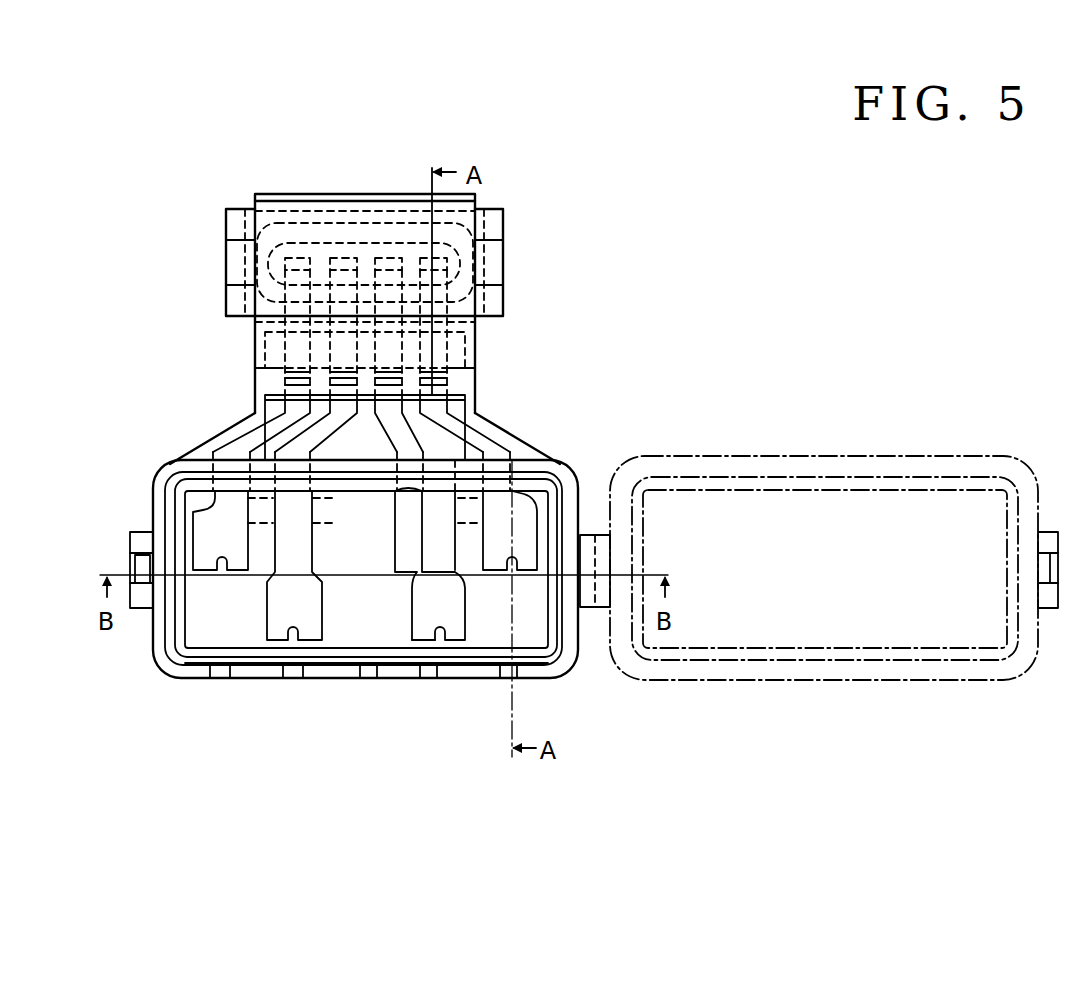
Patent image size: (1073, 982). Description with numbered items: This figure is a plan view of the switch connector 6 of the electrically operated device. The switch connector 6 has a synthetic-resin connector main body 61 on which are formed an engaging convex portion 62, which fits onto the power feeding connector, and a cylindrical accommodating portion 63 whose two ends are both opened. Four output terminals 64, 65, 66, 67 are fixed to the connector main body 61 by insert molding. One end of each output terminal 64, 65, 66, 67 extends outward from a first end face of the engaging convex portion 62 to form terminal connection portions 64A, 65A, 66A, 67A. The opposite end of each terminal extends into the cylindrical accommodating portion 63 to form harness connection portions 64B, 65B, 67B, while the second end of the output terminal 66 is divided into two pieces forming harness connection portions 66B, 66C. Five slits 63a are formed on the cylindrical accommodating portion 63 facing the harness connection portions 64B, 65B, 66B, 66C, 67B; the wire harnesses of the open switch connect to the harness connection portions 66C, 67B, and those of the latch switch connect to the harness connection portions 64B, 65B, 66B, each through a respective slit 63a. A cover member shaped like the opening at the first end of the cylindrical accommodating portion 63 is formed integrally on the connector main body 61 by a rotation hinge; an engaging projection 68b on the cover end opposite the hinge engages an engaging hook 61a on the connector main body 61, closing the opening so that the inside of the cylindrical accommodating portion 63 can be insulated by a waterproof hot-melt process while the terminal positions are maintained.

The switch connector 6 is at (627, 360).
The connector main body 61 is at (223, 430).
The engaging hook 61a is at (143, 563).
The engaging convex portion 62 is at (396, 246).
The cylindrical accommodating portion 63 is at (173, 668).
The slits 63a is at (220, 680).
The output terminal 64 is at (285, 299).
The terminal connection portion 64A is at (292, 255).
The harness connection portion 64B is at (238, 572).
The output terminal 65 is at (328, 293).
The terminal connection portion 65A is at (342, 258).
The harness connection portion 65B is at (312, 640).
The output terminal 66 is at (403, 350).
The terminal connection portion 66A is at (385, 258).
The harness connection portion 66B is at (386, 572).
The harness connection portion 66C is at (420, 640).
The output terminal 67 is at (492, 430).
The terminal connection portion 67A is at (433, 262).
The harness connection portion 67B is at (530, 573).
The engaging projection 68b is at (141, 534).